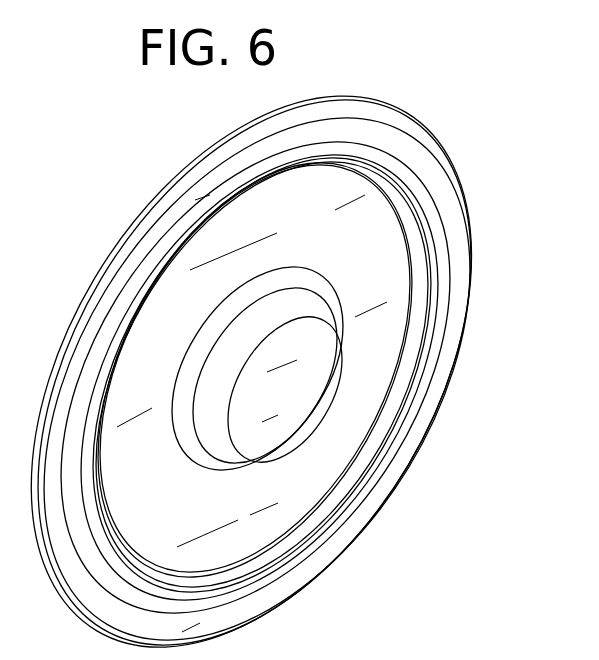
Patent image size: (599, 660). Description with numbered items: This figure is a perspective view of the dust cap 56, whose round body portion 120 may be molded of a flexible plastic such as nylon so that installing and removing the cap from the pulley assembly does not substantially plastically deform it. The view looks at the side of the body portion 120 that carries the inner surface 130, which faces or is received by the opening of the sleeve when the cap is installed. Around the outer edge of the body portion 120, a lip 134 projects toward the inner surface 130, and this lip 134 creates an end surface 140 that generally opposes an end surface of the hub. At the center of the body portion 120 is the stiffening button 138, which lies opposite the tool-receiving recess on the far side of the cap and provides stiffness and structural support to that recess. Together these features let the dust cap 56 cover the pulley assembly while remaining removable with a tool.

The dust cap 56 is at (497, 194).
The body portion 120 is at (324, 241).
The inner surface 130 is at (363, 390).
The lip 134 is at (341, 96).
The stiffening button 138 is at (317, 345).
The end surface 140 is at (381, 108).